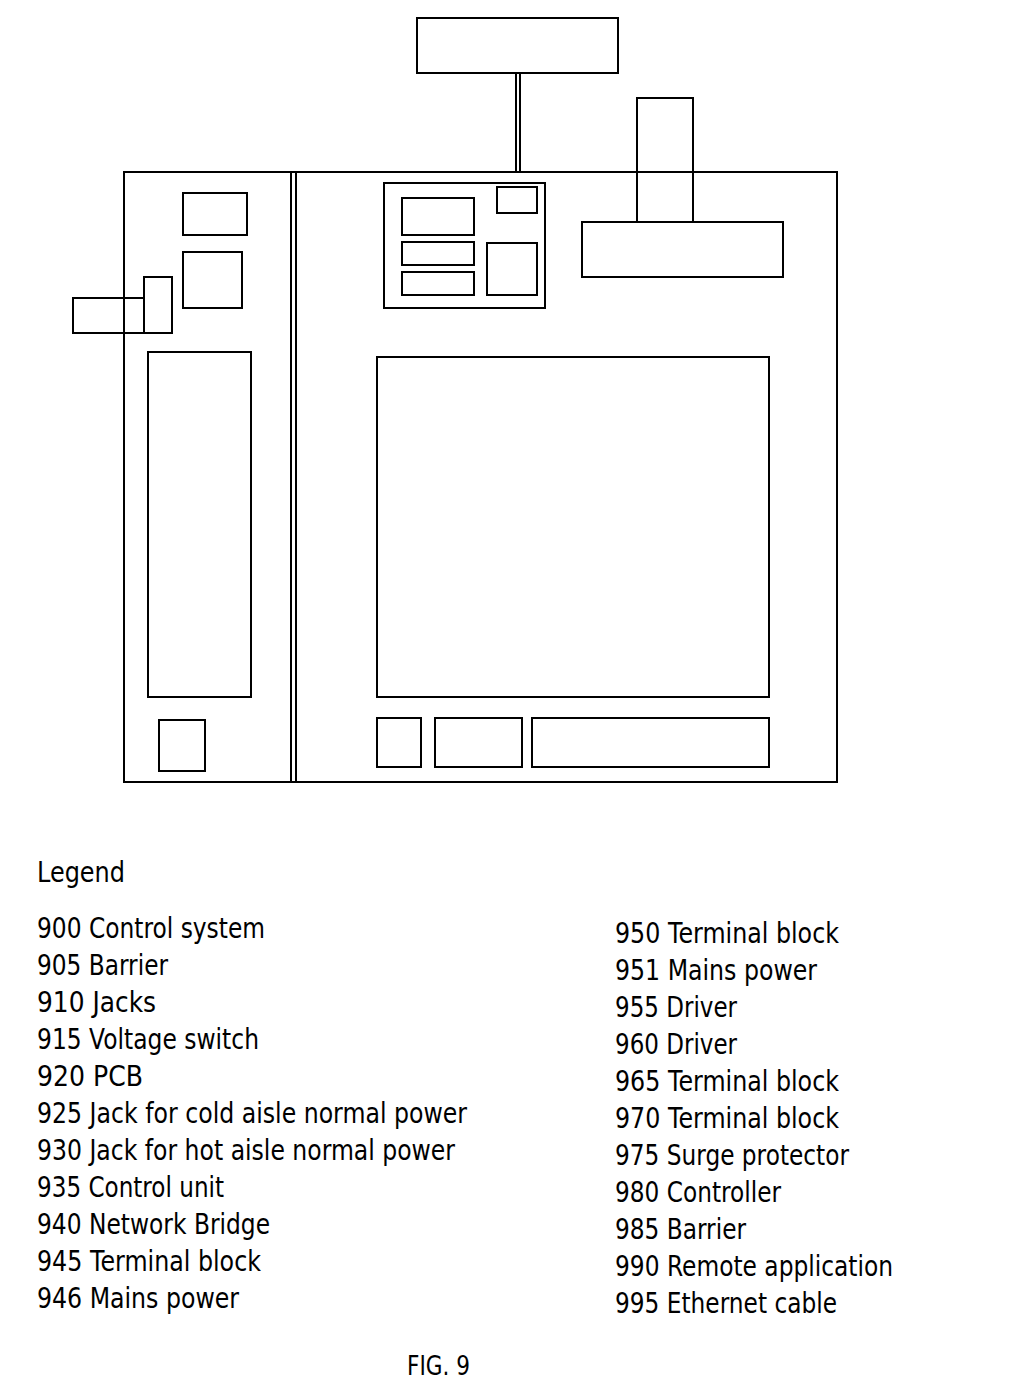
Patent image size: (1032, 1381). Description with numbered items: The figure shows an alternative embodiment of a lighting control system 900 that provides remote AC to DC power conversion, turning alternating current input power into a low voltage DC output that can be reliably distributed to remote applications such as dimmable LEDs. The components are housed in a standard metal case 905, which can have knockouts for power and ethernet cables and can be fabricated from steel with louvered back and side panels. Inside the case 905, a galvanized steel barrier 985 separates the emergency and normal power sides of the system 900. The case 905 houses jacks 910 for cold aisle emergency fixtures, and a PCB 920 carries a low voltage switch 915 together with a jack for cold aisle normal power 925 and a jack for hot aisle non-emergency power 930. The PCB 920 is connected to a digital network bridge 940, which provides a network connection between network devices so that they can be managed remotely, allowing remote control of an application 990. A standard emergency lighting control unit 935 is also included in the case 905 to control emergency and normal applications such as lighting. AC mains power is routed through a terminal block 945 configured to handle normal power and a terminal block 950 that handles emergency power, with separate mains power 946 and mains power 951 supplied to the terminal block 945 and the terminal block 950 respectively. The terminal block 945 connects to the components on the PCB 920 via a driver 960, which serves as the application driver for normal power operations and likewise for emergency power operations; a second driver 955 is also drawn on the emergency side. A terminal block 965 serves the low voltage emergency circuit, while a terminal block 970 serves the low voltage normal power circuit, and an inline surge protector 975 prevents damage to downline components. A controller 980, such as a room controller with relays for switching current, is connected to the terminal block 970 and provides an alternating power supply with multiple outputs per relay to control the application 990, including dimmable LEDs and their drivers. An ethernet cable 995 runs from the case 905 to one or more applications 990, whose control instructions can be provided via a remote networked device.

The lighting control system 900 is at (158, 32).
The case 905 is at (322, 168).
The jacks 910 is at (210, 197).
The low voltage switch 915 is at (460, 230).
The PCB 920 is at (413, 182).
The jack for cold aisle normal power 925 is at (407, 253).
The jack for hot aisle power 930 is at (408, 282).
The emergency lighting control unit 935 is at (207, 275).
The digital network bridge 940 is at (522, 270).
The terminal block 945 is at (722, 240).
The mains power 946 is at (687, 158).
The terminal block 950 is at (153, 288).
The mains power 951 is at (128, 328).
The Driver 955 is at (172, 503).
The driver 960 is at (738, 408).
The terminal block 965 is at (183, 750).
The terminal block 970 is at (748, 748).
The surge protector 975 is at (403, 748).
The controller 980 is at (466, 748).
The barrier 985 is at (289, 761).
The application 990 is at (438, 53).
The ethernet cable 995 is at (512, 117).